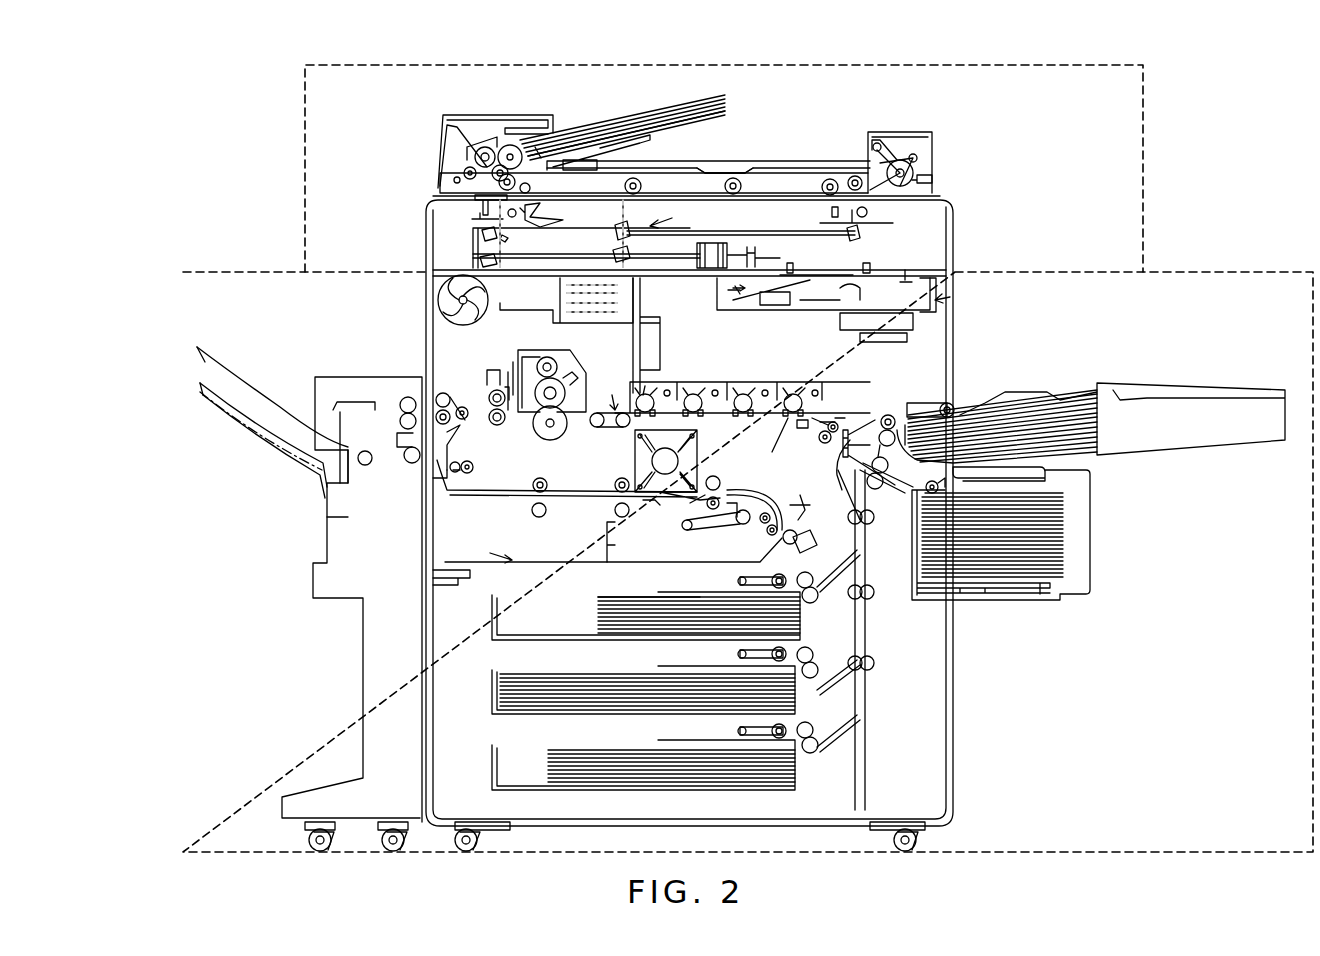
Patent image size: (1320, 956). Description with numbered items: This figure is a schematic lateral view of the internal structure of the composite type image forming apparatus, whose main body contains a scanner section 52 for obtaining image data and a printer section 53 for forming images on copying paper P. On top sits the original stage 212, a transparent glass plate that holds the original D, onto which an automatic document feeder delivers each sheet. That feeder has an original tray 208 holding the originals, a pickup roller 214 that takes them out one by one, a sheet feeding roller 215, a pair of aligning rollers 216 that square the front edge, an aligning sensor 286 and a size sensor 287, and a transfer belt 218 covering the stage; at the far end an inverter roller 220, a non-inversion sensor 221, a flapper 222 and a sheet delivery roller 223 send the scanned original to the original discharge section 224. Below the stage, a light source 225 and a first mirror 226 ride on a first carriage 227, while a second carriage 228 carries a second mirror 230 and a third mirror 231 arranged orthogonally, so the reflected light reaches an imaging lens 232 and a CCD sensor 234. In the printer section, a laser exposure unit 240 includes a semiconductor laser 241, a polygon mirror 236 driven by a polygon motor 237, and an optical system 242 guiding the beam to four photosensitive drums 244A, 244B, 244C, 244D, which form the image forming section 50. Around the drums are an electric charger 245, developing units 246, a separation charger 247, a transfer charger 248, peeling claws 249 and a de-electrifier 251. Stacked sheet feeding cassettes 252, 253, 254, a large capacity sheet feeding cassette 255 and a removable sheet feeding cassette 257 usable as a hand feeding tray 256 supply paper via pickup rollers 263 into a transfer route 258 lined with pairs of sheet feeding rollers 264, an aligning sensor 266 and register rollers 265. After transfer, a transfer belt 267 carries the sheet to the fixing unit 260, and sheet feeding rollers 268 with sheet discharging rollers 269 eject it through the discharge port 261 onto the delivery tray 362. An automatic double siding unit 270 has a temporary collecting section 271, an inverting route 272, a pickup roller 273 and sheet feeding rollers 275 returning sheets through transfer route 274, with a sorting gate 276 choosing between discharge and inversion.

The scanner section 52 is at (305, 96).
The printer section 53 is at (258, 272).
The sheet feeding roller 215 is at (447, 124).
The pickup roller 214 is at (485, 147).
The original tray 208 is at (615, 140).
The original D is at (700, 100).
The aligning sensor 286 is at (462, 170).
The size sensor 287 is at (423, 156).
The aligning rollers 216 is at (462, 190).
The first carriage 227 is at (480, 205).
The second mirror 230 is at (470, 219).
The second carriage 228 is at (478, 240).
The third mirror 231 is at (478, 262).
The light source 225 is at (563, 220).
The first mirror 226 is at (508, 240).
The image forming section 50 is at (666, 234).
The imaging lens 232 is at (710, 228).
The CCD sensor 234 is at (760, 255).
The semiconductor laser 241 is at (840, 272).
The polygon mirror 236 is at (905, 275).
The transfer belt 218 is at (697, 168).
The original discharge section 224 is at (738, 167).
The original stage 212 is at (810, 185).
The sheet delivery roller 223 is at (872, 145).
The flapper 222 is at (900, 160).
The inverter roller 220 is at (932, 147).
The non-inversion sensor 221 is at (932, 180).
The laser exposure unit 240 is at (950, 297).
The polygon motor 237 is at (913, 322).
The optical system 242 is at (717, 292).
The fixing unit 260 is at (565, 304).
The sorting gate 276 is at (495, 378).
The sheet discharging rollers 269 is at (458, 395).
The discharge port 261 is at (415, 400).
The de-electrifier 251 is at (575, 375).
The electric charger 245 is at (672, 378).
The photosensitive drum 244C is at (660, 380).
The peeling claws 249 is at (725, 392).
The photosensitive drum 244A is at (800, 385).
The developing unit 246 is at (750, 392).
The separation charger 247 is at (805, 400).
The register rollers 265 is at (832, 418).
The aligning sensor 266 is at (850, 432).
The transfer charger 248 is at (811, 469).
The photosensitive drum 244D is at (632, 450).
The photosensitive drum 244B is at (725, 483).
The transfer route 274 is at (805, 508).
The pickup roller 273 is at (725, 530).
The sheet feeding rollers 275 is at (785, 545).
The inverting route 272 is at (492, 500).
The automatic double siding unit 270 is at (523, 556).
The temporary collecting section 271 is at (607, 545).
The transfer route 258 is at (612, 395).
The transfer belt 267 is at (612, 430).
The sheet feeding rollers 268 is at (497, 425).
The sheet feeding cassette 252 is at (492, 622).
The sheet feeding cassette 253 is at (492, 695).
The sheet feeding cassette 254 is at (492, 773).
The copying paper P is at (610, 595).
The pickup roller 263 is at (740, 579).
The sheet feeding rollers 264 is at (893, 416).
The large capacity sheet feeding cassette 255 is at (993, 560).
The hand feeding tray 256 is at (1058, 380).
The sheet feeding cassette 257 is at (1195, 390).
The delivery tray 362 is at (220, 470).